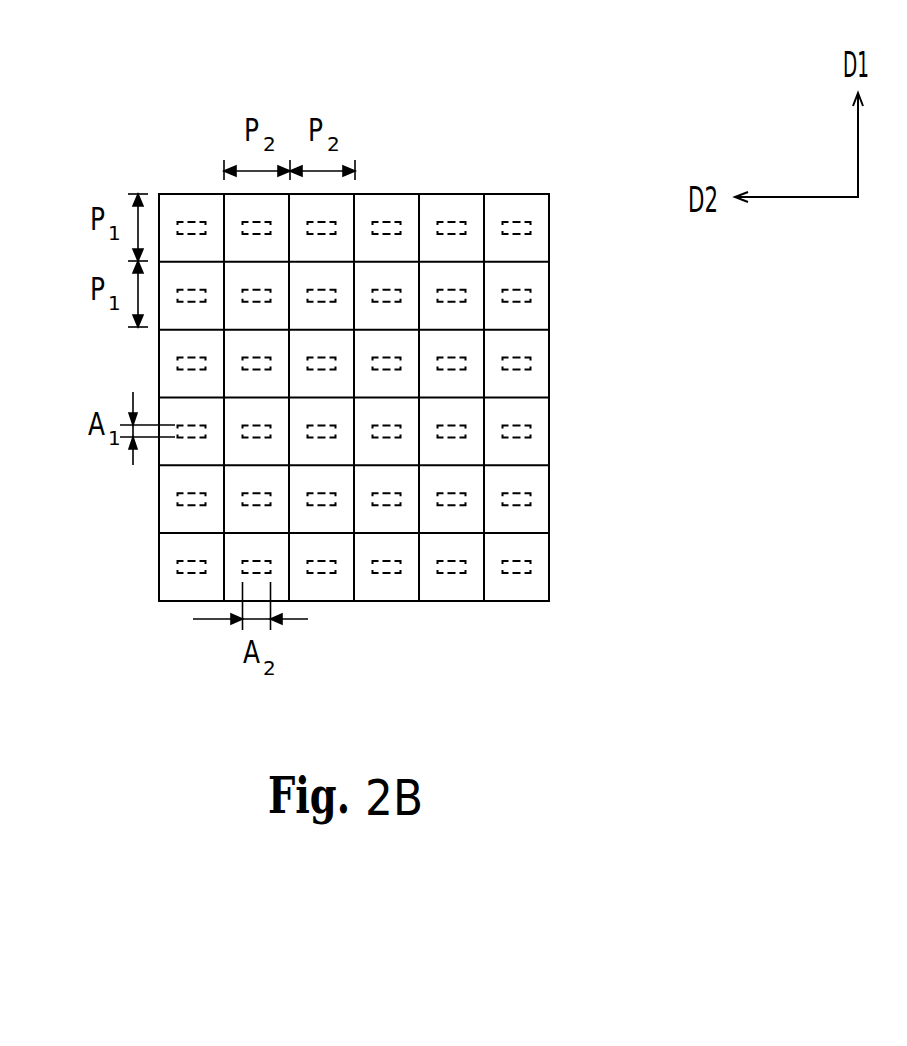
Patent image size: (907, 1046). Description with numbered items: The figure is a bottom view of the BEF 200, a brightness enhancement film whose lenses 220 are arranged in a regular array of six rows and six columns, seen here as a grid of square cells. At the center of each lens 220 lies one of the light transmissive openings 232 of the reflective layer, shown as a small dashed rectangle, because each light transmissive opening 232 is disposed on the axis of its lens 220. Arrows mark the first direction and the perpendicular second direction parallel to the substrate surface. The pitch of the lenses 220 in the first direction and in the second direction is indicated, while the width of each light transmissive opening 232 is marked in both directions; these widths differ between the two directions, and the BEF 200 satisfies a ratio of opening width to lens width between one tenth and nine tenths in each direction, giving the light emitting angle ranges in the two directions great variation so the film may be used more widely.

The BEF 200 is at (728, 707).
The lenses 220 is at (450, 210).
The light transmissive openings 232 is at (388, 221).